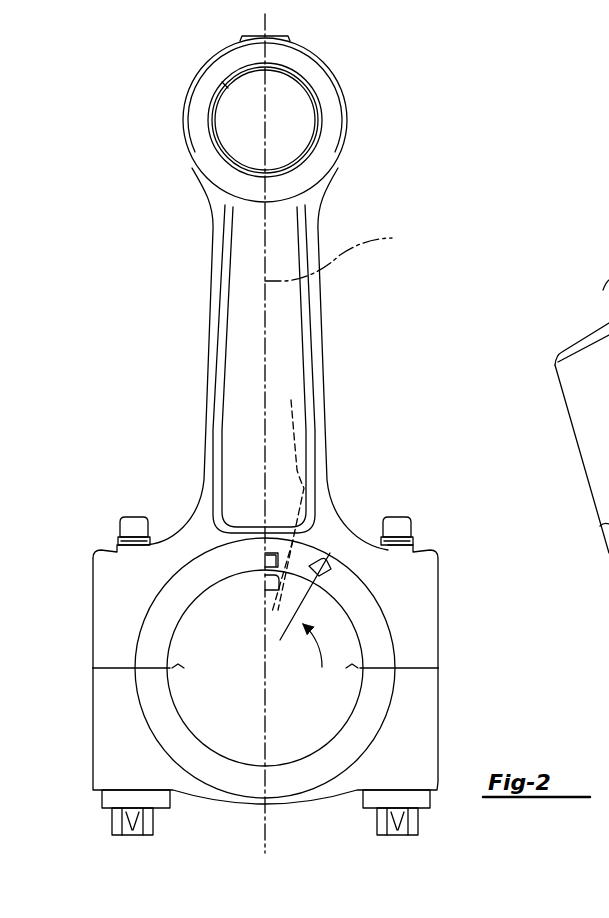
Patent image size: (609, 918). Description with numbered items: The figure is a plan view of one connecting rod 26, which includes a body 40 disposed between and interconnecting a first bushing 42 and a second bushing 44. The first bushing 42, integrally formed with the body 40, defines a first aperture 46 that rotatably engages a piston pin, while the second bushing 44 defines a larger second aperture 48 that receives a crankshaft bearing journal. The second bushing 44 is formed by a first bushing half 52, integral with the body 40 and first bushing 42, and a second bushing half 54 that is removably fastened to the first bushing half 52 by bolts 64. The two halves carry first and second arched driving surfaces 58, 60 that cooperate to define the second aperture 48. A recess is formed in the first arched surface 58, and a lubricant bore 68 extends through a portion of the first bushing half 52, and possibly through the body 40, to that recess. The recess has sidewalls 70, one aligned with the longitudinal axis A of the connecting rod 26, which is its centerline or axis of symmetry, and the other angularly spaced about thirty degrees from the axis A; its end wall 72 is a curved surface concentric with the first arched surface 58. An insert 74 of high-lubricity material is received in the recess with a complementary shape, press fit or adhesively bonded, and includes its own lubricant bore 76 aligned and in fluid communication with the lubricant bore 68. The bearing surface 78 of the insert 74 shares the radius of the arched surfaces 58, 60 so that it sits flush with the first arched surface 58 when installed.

The connecting rod 26 is at (280, 293).
The body 40 is at (243, 300).
The first bushing 42 is at (348, 140).
The second bushing 44 is at (286, 610).
The first aperture 46 is at (235, 133).
The second aperture 48 is at (205, 717).
The first bushing half 52 is at (88, 590).
The second bushing half 54 is at (88, 762).
The first arched driving surface 58 is at (186, 620).
The second arched driving surface 60 is at (303, 757).
The bolts 64 is at (140, 836).
The lubricant bore 68 is at (288, 495).
The sidewalls 70 is at (275, 553).
The end wall 72 is at (320, 565).
The insert 74 is at (268, 562).
The lubricant bore 76 is at (212, 648).
The bearing surface 78 is at (268, 590).
The longitudinal axis A is at (337, 254).